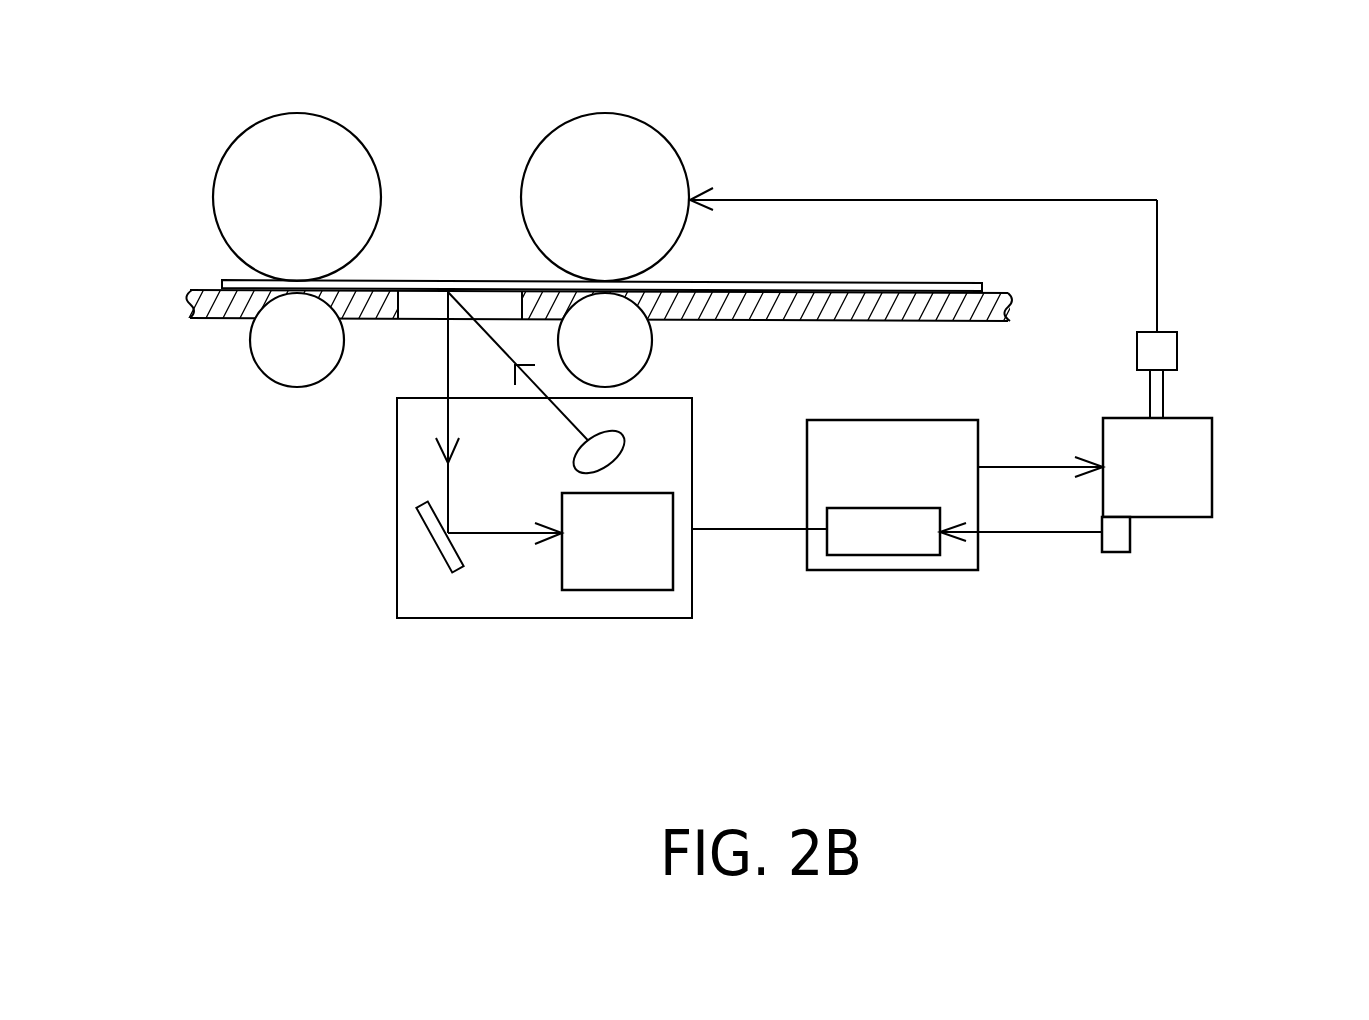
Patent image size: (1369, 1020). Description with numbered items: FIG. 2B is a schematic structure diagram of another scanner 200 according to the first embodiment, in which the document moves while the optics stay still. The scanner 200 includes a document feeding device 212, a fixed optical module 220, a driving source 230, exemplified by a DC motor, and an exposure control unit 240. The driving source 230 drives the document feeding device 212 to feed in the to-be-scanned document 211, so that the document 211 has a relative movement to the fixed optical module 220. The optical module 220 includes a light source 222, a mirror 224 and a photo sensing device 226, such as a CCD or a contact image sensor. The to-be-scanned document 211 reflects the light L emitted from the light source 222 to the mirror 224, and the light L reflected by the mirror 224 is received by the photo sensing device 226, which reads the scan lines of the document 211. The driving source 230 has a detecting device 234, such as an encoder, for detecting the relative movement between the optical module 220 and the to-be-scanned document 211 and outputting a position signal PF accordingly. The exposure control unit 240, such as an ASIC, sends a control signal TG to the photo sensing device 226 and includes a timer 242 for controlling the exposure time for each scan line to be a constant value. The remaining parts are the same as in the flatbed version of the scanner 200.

The scanner 200 is at (323, 690).
The to-be-scanned document 211 is at (223, 280).
The document feeding device 212 is at (297, 197).
The optical module 220 is at (695, 445).
The light source 222 is at (613, 432).
The mirror 224 is at (425, 537).
The photo sensing device 226 is at (673, 560).
The driving source 230 is at (1212, 470).
The detecting device 234 is at (1130, 530).
The exposure control unit 240 is at (910, 420).
The timer 242 is at (882, 556).